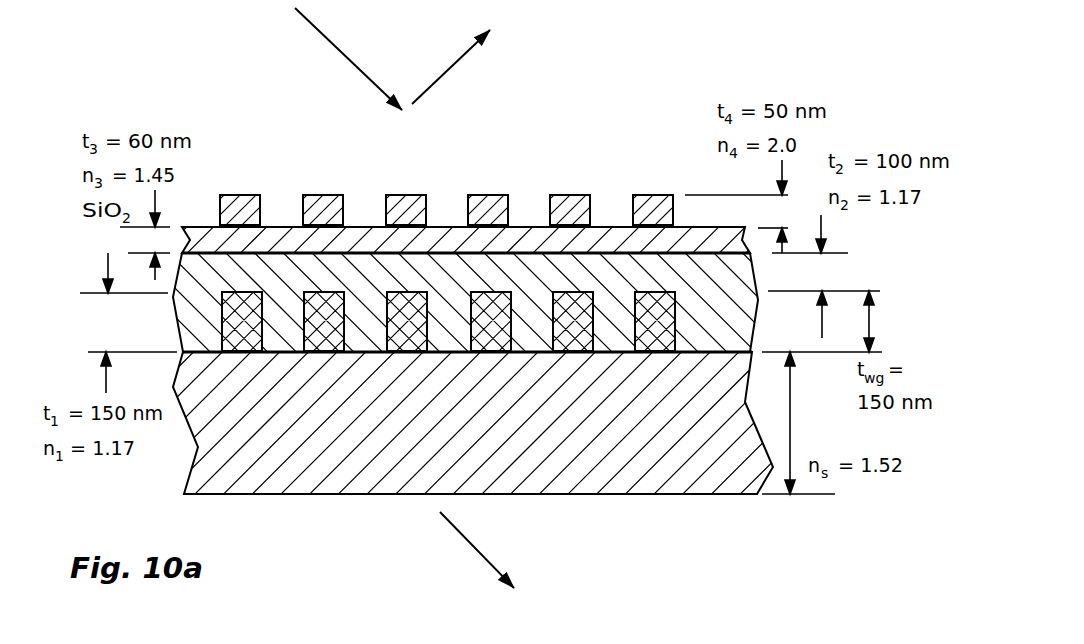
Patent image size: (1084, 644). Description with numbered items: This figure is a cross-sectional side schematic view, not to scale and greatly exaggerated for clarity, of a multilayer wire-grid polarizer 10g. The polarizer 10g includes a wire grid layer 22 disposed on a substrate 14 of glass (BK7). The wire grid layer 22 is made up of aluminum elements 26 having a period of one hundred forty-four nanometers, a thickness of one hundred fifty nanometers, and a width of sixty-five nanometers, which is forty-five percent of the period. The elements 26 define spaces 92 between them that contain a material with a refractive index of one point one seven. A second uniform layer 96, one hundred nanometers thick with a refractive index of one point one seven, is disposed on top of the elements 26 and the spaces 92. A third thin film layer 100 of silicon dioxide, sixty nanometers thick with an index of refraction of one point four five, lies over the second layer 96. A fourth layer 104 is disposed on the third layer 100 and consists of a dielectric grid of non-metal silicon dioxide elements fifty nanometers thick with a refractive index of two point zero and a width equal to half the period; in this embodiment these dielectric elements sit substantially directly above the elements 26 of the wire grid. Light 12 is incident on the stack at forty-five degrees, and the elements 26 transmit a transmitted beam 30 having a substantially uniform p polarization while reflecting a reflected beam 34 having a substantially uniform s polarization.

The multilayer wire-grid polarizer 10g is at (378, 512).
The light 12 is at (348, 62).
The substrate 14 is at (710, 494).
The wire grid layer 22 is at (312, 292).
The elements 26 is at (397, 293).
The transmitted beam 30 is at (470, 545).
The reflected beam 34 is at (445, 72).
The spaces 92 is at (685, 343).
The second uniform layer 96 is at (617, 278).
The third thin film layer 100 is at (611, 238).
The fourth layer 104 is at (654, 205).